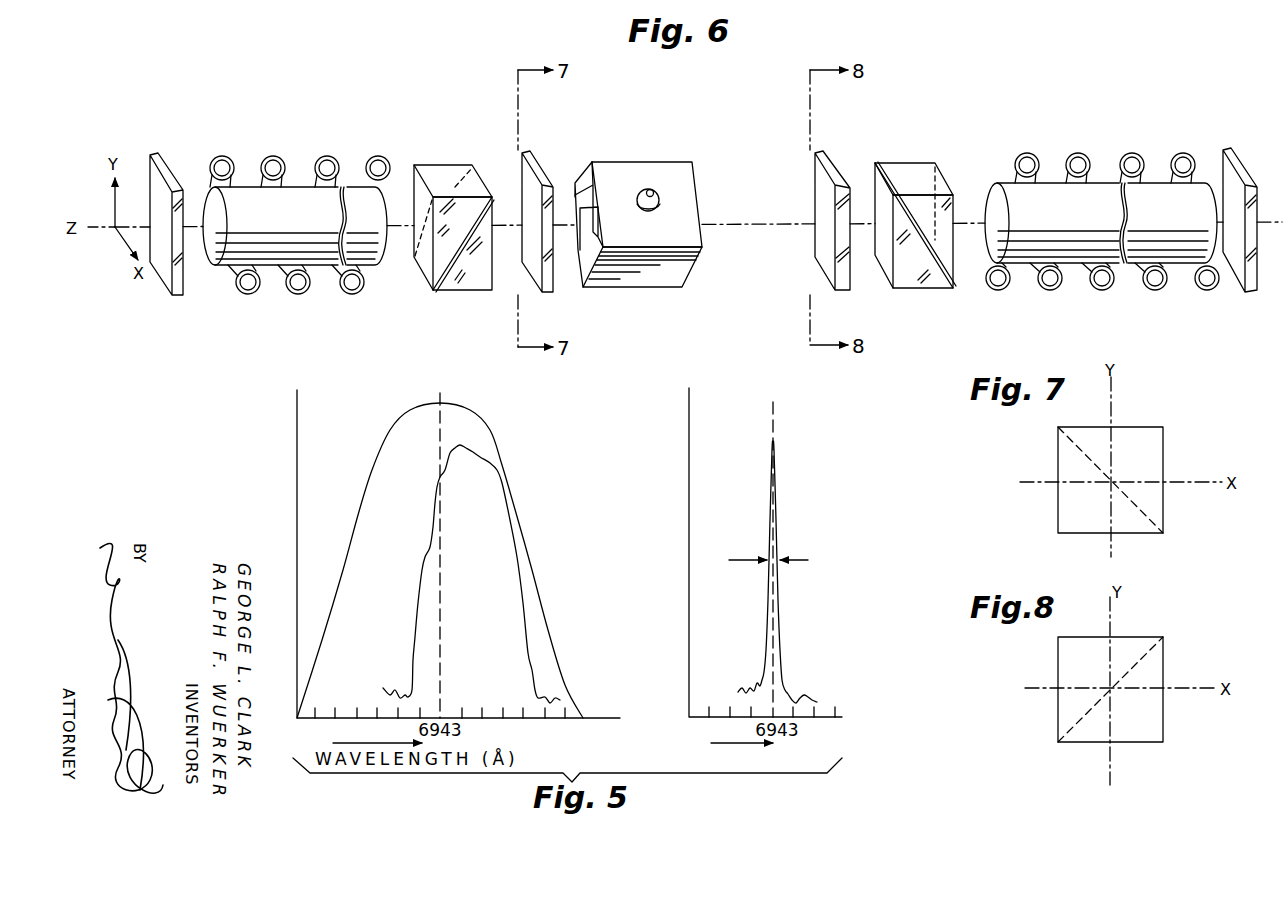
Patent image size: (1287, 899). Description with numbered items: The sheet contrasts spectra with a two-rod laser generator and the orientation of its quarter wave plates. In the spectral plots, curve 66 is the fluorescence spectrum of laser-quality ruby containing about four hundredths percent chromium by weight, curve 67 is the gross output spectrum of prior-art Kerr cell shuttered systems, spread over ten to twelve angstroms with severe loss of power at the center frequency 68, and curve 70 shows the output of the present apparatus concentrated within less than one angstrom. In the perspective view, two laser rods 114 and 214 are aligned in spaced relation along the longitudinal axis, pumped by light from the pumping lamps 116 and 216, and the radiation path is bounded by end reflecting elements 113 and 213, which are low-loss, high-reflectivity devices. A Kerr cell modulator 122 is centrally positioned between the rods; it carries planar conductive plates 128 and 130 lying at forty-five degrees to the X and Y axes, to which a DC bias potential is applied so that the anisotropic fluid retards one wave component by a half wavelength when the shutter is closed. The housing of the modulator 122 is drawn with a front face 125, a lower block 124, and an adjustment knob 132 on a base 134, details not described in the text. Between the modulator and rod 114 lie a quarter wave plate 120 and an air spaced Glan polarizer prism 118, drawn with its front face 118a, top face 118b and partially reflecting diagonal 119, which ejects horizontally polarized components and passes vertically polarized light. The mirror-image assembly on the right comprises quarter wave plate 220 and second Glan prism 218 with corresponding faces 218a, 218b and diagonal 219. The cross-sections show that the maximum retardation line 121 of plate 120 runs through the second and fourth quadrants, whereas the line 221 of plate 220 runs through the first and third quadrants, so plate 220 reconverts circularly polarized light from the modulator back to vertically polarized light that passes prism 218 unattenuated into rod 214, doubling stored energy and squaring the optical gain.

In FIG. 6, the end reflecting element 113 is at (158, 154).
In FIG. 6, the first laser rod 114 is at (296, 186).
In FIG. 6, the pumping lamps 116 is at (372, 157).
In FIG. 6, the air spaced Glan polarizer prism 118 is at (443, 217).
In FIG. 6, the front face of beam splitter 118a is at (490, 290).
In FIG. 6, the top face of beam splitter 118b is at (453, 168).
In FIG. 6, the partially reflecting diagonal surface 119 is at (432, 291).
In FIG. 6, the quarter wave plate 120 is at (525, 152).
In FIG. 7, the quarter wave plate 120 is at (1143, 427).
In FIG. 7, the maximum retardation line 121 is at (1093, 461).
In FIG. 6, the Kerr cell modulator 122 is at (649, 216).
In FIG. 6, the lower housing block 124 is at (663, 286).
In FIG. 6, the front face of cell housing 125 is at (688, 168).
In FIG. 6, the planar conductive plate 128 is at (578, 184).
In FIG. 6, the planar conductive plate 130 is at (581, 263).
In FIG. 6, the adjustment knob 132 is at (650, 190).
In FIG. 6, the knob base 134 is at (657, 207).
In FIG. 6, the end reflecting element 213 is at (1230, 151).
In FIG. 6, the second laser rod 214 is at (1053, 182).
In FIG. 6, the pumping lamps 216 is at (1138, 157).
In FIG. 6, the second Glan prism 218 is at (935, 216).
In FIG. 6, the front face of beam splitter 218a is at (927, 289).
In FIG. 6, the top face of beam splitter 218b is at (914, 166).
In FIG. 6, the partially reflecting diagonal surface 219 is at (954, 287).
In FIG. 6, the quarter wave plate 220 is at (818, 153).
In FIG. 8, the quarter wave plate 220 is at (1133, 637).
In FIG. 8, the line of maximum retardation 221 is at (1130, 668).
In FIG. 5, the fluorescence spectrum curve 66 is at (392, 434).
In FIG. 5, the gross output spectrum curve 67 is at (437, 479).
In FIG. 5, the center frequency 68 is at (441, 615).
In FIG. 5, the output curve of the invention 70 is at (777, 523).